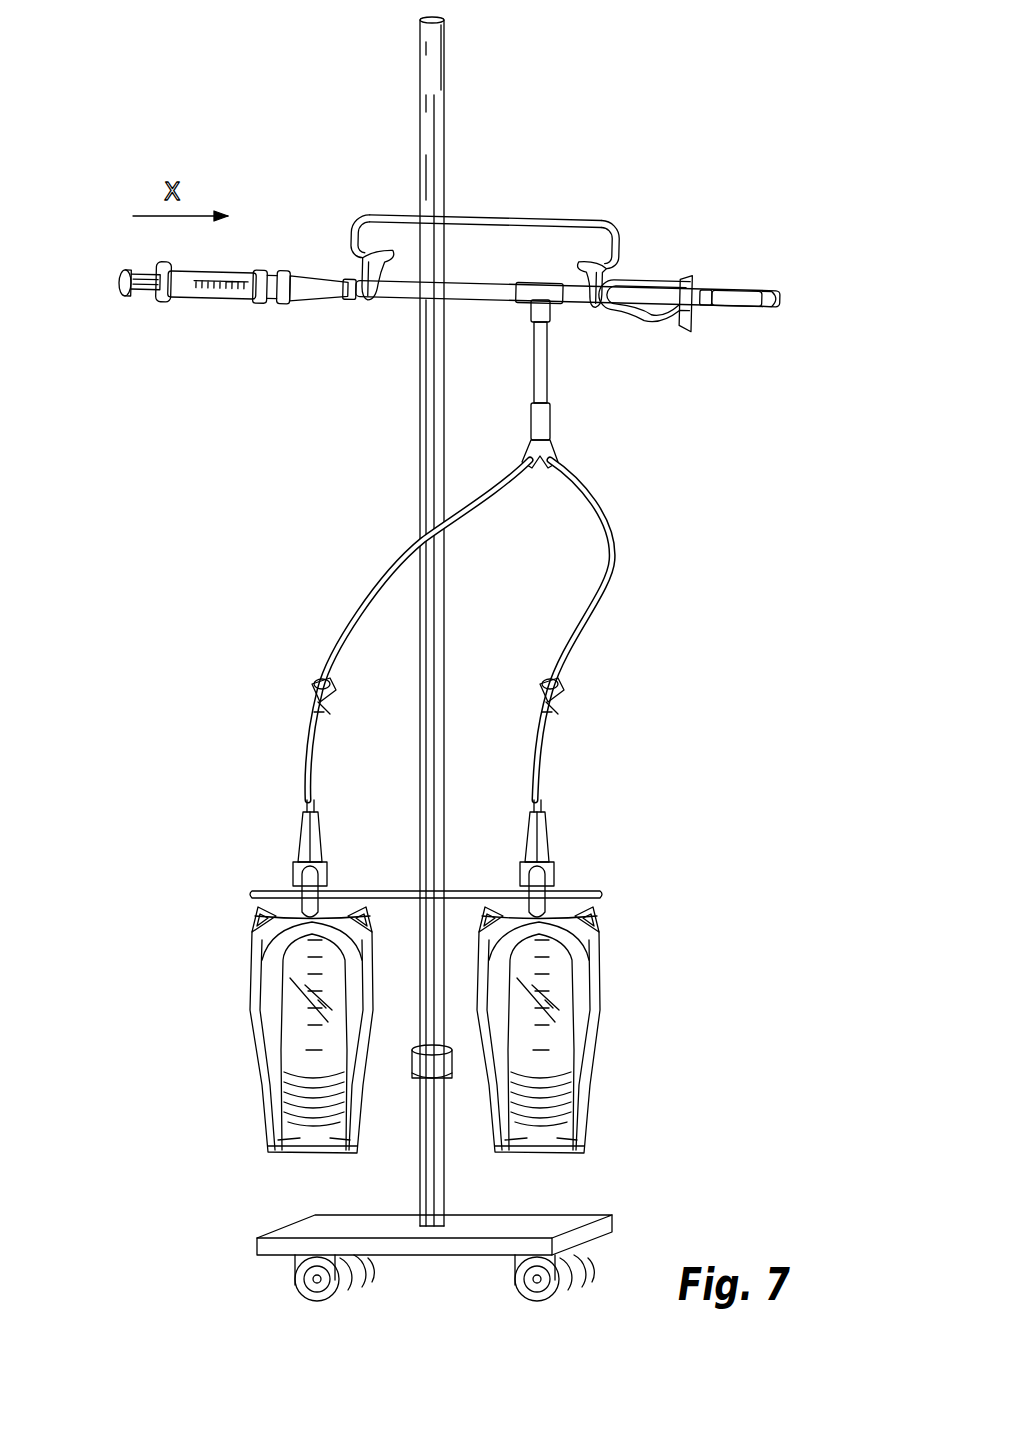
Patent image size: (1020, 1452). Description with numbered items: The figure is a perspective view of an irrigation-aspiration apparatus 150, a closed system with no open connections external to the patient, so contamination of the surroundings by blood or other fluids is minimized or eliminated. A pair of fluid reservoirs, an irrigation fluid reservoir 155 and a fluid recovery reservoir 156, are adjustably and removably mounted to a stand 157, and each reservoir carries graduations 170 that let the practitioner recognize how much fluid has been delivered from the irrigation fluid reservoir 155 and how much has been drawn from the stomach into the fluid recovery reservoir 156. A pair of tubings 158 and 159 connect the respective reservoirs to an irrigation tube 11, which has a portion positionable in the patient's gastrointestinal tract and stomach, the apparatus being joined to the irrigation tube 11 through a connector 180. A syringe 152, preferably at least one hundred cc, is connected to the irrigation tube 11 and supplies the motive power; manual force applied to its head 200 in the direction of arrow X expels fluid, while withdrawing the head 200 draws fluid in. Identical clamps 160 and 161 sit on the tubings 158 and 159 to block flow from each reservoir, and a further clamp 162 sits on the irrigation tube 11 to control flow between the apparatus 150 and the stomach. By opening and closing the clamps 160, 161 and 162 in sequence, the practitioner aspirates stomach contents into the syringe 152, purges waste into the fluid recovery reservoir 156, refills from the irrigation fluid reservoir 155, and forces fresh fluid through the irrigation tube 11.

The irrigation tube 11 is at (780, 288).
The irrigation-aspiration apparatus 150 is at (692, 540).
The syringe 152 is at (262, 266).
The irrigation fluid reservoir 155 is at (268, 1146).
The fluid recovery reservoir 156 is at (596, 1146).
The stand 157 is at (446, 146).
The tubing 158 is at (358, 606).
The tubing 159 is at (600, 598).
The clamp 160 is at (312, 690).
The clamp 161 is at (562, 704).
The clamp 162 is at (624, 276).
The graduations 170 is at (280, 990).
The connector 180 is at (738, 290).
The head 200 is at (118, 272).